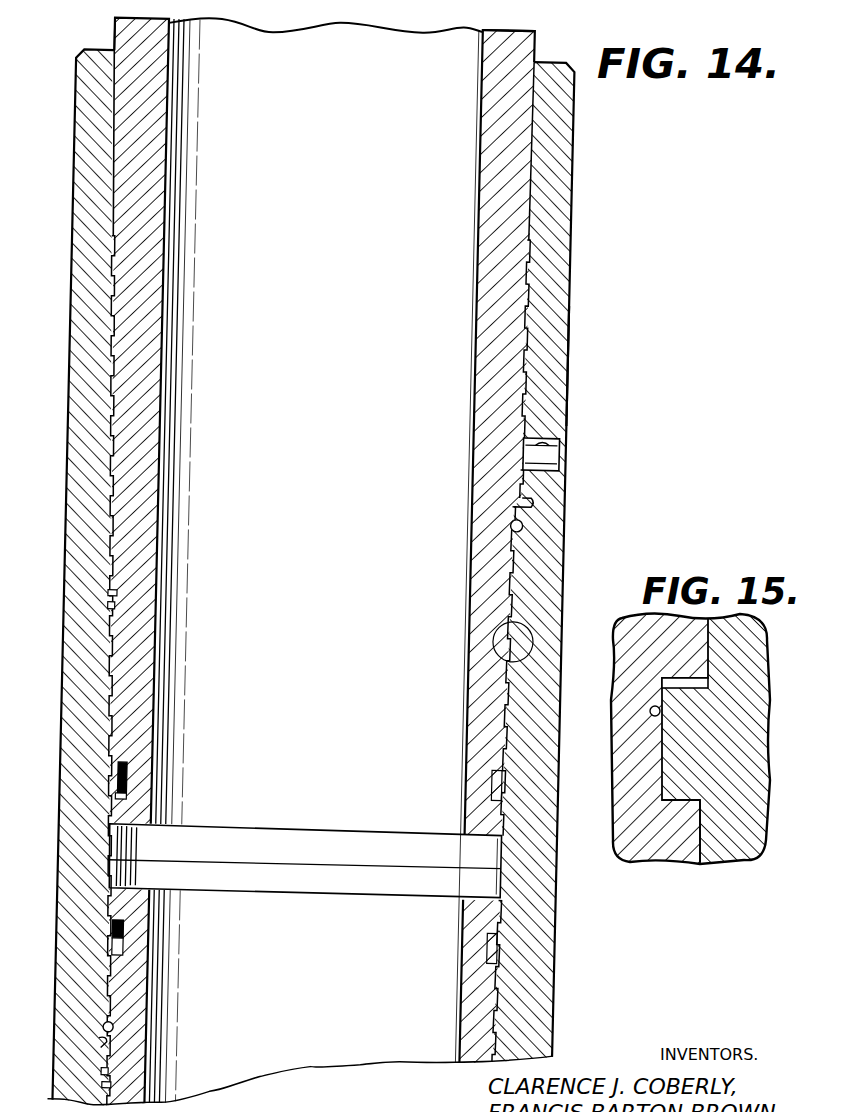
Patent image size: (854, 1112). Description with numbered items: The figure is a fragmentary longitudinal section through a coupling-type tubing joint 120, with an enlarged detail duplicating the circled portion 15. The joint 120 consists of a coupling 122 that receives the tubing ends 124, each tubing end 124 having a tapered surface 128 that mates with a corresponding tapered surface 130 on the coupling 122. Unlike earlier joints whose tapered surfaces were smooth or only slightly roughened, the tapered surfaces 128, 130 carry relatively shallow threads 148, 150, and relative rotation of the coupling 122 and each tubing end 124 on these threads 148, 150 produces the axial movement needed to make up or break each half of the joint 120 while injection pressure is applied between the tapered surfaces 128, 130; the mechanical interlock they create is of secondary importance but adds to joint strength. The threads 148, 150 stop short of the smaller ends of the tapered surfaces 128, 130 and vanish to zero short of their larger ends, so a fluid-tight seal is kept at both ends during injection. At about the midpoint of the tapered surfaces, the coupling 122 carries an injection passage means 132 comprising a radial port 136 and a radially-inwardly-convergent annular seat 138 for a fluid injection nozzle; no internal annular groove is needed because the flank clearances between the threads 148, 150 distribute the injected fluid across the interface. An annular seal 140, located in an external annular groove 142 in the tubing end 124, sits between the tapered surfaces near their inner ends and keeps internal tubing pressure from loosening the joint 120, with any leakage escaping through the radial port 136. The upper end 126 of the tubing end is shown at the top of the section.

In FIG. 14, the tubing joint 120 is at (578, 387).
In FIG. 14, the coupling 122 is at (556, 272).
In FIG. 15, the coupling 122 is at (730, 713).
In FIG. 14, the tubing end 124 is at (515, 153).
In FIG. 14, the upper end of inner member 126 is at (537, 40).
In FIG. 14, the tapered surface 128 is at (532, 503).
In FIG. 15, the tapered surface 128 is at (708, 860).
In FIG. 14, the tapered surface 130 is at (512, 523).
In FIG. 15, the tapered surface 130 is at (660, 715).
In FIG. 14, the injection passage means 132 is at (582, 453).
In FIG. 14, the radial port 136 is at (564, 438).
In FIG. 14, the annular seat 138 is at (573, 470).
In FIG. 14, the annular seal 140 is at (122, 783).
In FIG. 14, the external annular groove 142 is at (125, 769).
In FIG. 14, the thread 148 is at (113, 594).
In FIG. 15, the thread 148 is at (680, 848).
In FIG. 14, the thread 150 is at (112, 613).
In FIG. 15, the thread 150 is at (702, 775).
In FIG. 14, the circled portion 15 is at (525, 630).